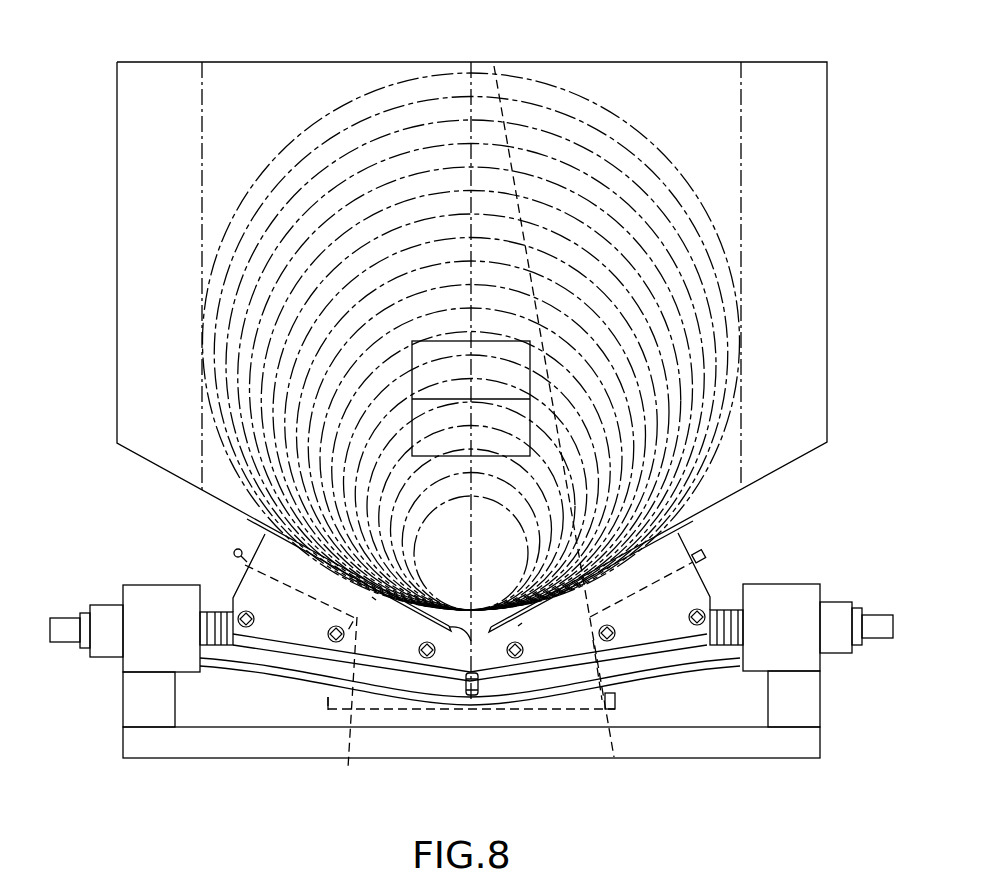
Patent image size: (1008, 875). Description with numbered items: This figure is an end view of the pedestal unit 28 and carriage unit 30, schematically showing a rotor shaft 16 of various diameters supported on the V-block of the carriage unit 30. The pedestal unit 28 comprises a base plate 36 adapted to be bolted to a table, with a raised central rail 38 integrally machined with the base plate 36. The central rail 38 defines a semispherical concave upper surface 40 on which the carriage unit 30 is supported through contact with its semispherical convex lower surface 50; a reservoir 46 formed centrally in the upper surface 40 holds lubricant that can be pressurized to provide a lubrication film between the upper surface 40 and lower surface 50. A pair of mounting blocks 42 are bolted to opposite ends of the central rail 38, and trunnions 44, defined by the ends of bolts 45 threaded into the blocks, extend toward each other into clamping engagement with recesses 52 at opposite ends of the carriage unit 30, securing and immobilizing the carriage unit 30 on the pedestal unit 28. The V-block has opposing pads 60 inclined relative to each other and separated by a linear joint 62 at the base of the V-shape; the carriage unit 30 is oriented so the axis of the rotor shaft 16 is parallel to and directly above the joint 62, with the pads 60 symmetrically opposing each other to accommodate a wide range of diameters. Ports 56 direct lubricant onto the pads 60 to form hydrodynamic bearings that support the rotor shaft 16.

The rotor shaft 16 is at (600, 86).
The pedestal unit 28 is at (243, 756).
The carriage unit 30 is at (672, 680).
The base plate 36 is at (508, 743).
The central rail 38 is at (141, 700).
The upper surface 40 is at (268, 665).
The mounting blocks 42 is at (131, 598).
The trunnions 44 is at (212, 631).
The bolts 45 is at (61, 626).
The reservoir 46 is at (470, 749).
The lower surface 50 is at (313, 692).
The recesses 52 is at (245, 612).
The ports 56 is at (280, 534).
The pads 60 is at (372, 597).
The linear joint 62 is at (448, 639).